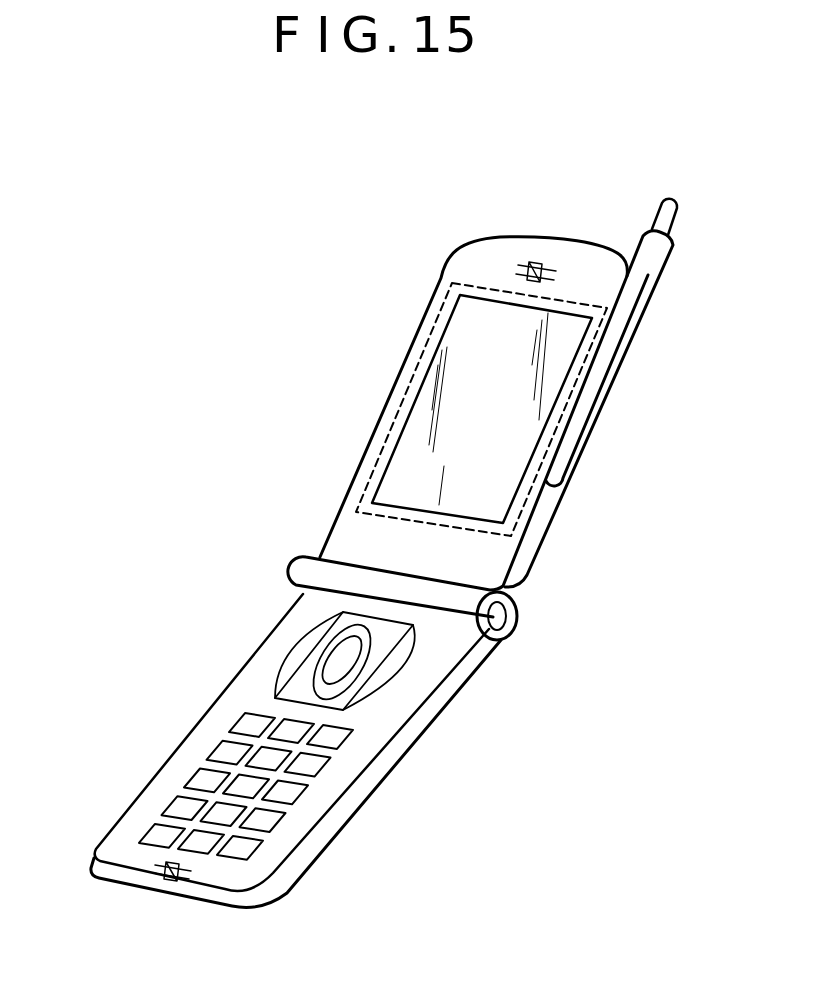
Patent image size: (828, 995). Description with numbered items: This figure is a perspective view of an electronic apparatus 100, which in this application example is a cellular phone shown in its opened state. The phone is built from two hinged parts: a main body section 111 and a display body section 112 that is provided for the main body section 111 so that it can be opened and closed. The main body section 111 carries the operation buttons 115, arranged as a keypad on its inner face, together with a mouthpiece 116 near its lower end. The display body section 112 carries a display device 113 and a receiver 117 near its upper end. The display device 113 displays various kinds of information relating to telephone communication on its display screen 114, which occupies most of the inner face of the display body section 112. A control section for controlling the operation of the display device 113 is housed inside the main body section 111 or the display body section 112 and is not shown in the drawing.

The electronic apparatus 100 is at (399, 228).
The main body section 111 is at (272, 580).
The display body section 112 is at (548, 615).
The display device 113 is at (407, 386).
The display screen 114 is at (588, 322).
The operation buttons 115 is at (201, 842).
The mouthpiece 116 is at (167, 881).
The receiver 117 is at (533, 262).